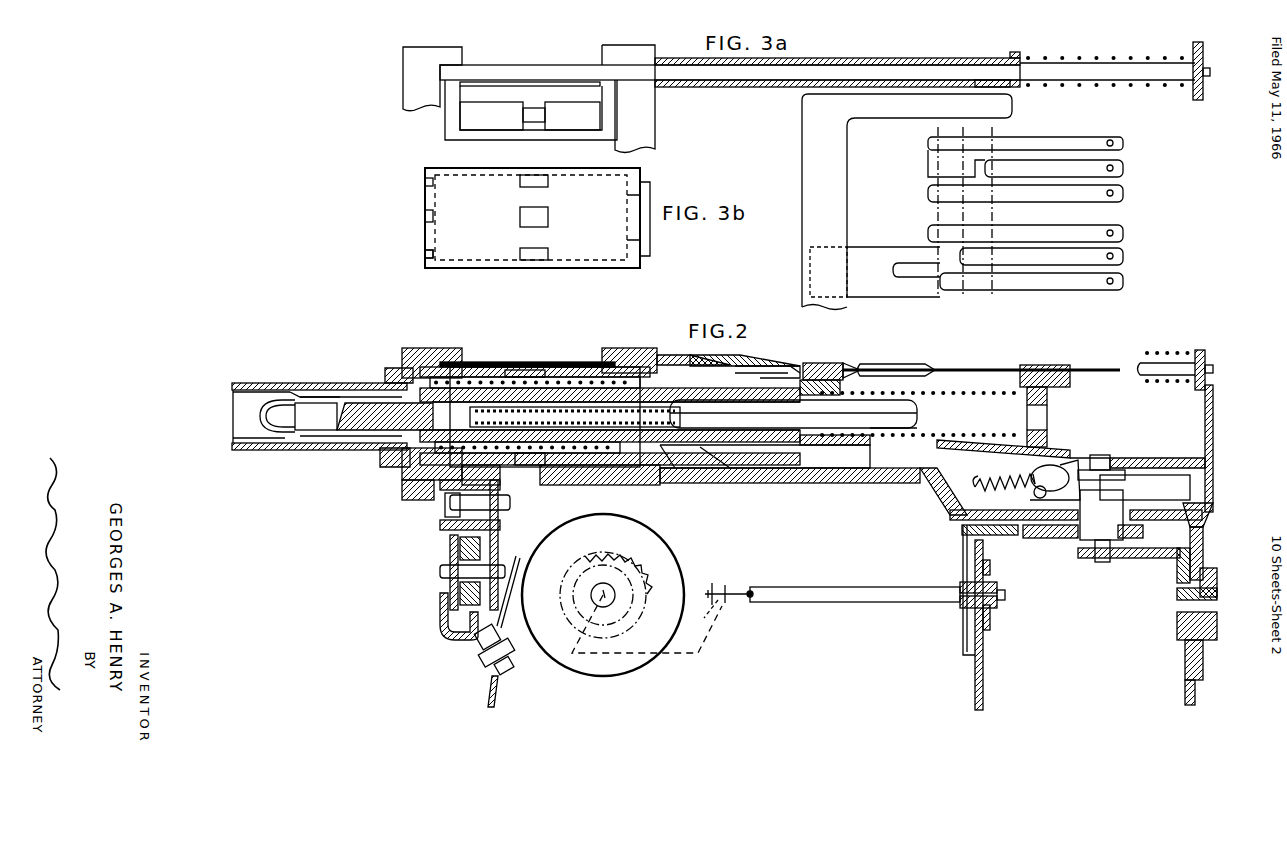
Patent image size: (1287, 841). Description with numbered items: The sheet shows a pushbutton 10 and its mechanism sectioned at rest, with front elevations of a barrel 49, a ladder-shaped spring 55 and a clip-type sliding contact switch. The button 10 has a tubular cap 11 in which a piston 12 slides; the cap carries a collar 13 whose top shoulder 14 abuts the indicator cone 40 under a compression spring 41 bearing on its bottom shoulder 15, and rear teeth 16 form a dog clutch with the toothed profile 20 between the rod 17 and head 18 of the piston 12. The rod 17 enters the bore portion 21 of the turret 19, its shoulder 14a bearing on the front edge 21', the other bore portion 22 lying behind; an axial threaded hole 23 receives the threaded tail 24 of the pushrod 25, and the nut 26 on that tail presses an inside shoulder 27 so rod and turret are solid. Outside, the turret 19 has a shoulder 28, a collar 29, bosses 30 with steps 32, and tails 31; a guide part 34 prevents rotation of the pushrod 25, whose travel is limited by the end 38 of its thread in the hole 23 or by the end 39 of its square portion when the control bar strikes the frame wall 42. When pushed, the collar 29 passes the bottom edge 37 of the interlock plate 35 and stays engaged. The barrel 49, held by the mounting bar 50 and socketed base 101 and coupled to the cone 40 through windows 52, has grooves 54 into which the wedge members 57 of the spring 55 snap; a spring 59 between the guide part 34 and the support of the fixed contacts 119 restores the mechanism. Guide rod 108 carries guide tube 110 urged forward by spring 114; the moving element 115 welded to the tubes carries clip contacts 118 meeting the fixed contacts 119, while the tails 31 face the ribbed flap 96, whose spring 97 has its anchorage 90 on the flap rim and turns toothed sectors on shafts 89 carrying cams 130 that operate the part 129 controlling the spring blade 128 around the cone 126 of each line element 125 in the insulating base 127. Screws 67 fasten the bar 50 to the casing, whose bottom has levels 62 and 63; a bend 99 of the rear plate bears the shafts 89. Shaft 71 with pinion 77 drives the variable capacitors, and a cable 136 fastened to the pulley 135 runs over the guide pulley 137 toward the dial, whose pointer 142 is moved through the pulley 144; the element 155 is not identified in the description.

In FIG. 2, the pushbutton 10 is at (342, 383).
In FIG. 2, the tubular cap 11 is at (310, 390).
In FIG. 2, the piston 12 is at (305, 435).
In FIG. 2, the collar 13 is at (428, 352).
In FIG. 2, the top shoulder 14 is at (405, 468).
In FIG. 2, the shoulder 14a is at (495, 372).
In FIG. 2, the bottom shoulder 15 is at (455, 482).
In FIG. 2, the teeth 16 is at (380, 445).
In FIG. 2, the rod 17 is at (585, 407).
In FIG. 2, the head 18 is at (240, 420).
In FIG. 2, the turret 19 is at (520, 380).
In FIG. 2, the toothed profile 20 is at (290, 388).
In FIG. 2, the bore portion 21 is at (527, 473).
In FIG. 2, the front edge 21' is at (610, 479).
In FIG. 2, the bore portion 22 is at (765, 470).
In FIG. 2, the axial threaded hole 23 is at (618, 445).
In FIG. 2, the threaded tail 24 is at (541, 395).
In FIG. 2, the pushrod 25 is at (898, 430).
In FIG. 2, the collar unit 26 is at (675, 355).
In FIG. 2, the shoulder 27 is at (655, 470).
In FIG. 2, the shoulder 28 is at (635, 350).
In FIG. 2, the collar 29 is at (690, 470).
In FIG. 2, the indentations 30 is at (750, 365).
In FIG. 2, the tails 31 is at (872, 368).
In FIG. 2, the steps 32 is at (790, 366).
In FIG. 2, the guide part 34 is at (815, 380).
In FIG. 2, the interlock plate 35 is at (710, 358).
In FIG. 2, the bottom edge 37 is at (808, 363).
In FIG. 2, the end 38 is at (470, 365).
In FIG. 2, the end 39 is at (917, 413).
In FIG. 2, the indicator cone 40 is at (395, 372).
In FIG. 2, the compression spring 41 is at (563, 402).
In FIG. 2, the wall 42 is at (1213, 405).
In FIG. 3b, the barrel 49 is at (430, 225).
In FIG. 2, the barrel 49 is at (605, 370).
In FIG. 3a, the mounting bar 50 is at (403, 96).
In FIG. 2, the mounting bar 50 is at (402, 488).
In FIG. 3b, the windows 52 is at (425, 258).
In FIG. 3b, the longitudinal grooves 54 is at (540, 224).
In FIG. 2, the longitudinal grooves 54 is at (535, 462).
In FIG. 3a, the spring 55 is at (447, 134).
In FIG. 3a, the dihedron-shaped member 57 is at (534, 122).
In FIG. 2, the dihedron-shaped member 57 is at (530, 370).
In FIG. 2, the spring 59 is at (960, 395).
In FIG. 2, the level 62 is at (805, 484).
In FIG. 2, the level 63 is at (1213, 510).
In FIG. 2, the screws 67 is at (445, 510).
In FIG. 2, the shaft 71 is at (610, 600).
In FIG. 2, the pinion 77 is at (632, 564).
In FIG. 2, the shafts 89 is at (1108, 535).
In FIG. 2, the anchorage 90 is at (1058, 465).
In FIG. 2, the flap 96 is at (945, 470).
In FIG. 2, the spring 97 is at (978, 490).
In FIG. 2, the bend 99 is at (1135, 472).
In FIG. 3a, the socketed base 101 is at (655, 100).
In FIG. 3a, the guide rod 108 is at (549, 66).
In FIG. 3a, the guide tube 110 is at (948, 53).
In FIG. 3a, the spring 114 is at (1080, 60).
In FIG. 3a, the moving element 115 is at (803, 194).
In FIG. 2, the moving element 115 is at (840, 380).
In FIG. 3a, the sliding contacts 118 is at (885, 248).
In FIG. 2, the sliding contacts 118 is at (908, 364).
In FIG. 2, the fixed contacts 119 is at (1105, 369).
In FIG. 2, the line element 125 is at (835, 602).
In FIG. 2, the cone 126 is at (962, 582).
In FIG. 2, the insulating base 127 is at (990, 612).
In FIG. 2, the spring blade 128 is at (963, 635).
In FIG. 2, the part 129 is at (1010, 535).
In FIG. 2, the cam 130 is at (1055, 538).
In FIG. 2, the pulley 135 is at (655, 655).
In FIG. 2, the cable 136 is at (498, 624).
In FIG. 2, the guide pulley 137 is at (480, 668).
In FIG. 2, the pointer 142 is at (440, 610).
In FIG. 2, the pulley 144 is at (450, 550).
In FIG. 2, the pivot 155 is at (728, 588).